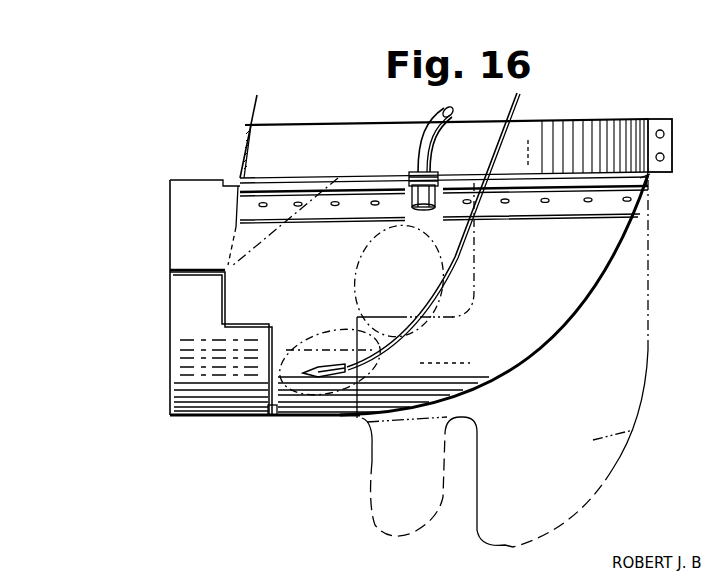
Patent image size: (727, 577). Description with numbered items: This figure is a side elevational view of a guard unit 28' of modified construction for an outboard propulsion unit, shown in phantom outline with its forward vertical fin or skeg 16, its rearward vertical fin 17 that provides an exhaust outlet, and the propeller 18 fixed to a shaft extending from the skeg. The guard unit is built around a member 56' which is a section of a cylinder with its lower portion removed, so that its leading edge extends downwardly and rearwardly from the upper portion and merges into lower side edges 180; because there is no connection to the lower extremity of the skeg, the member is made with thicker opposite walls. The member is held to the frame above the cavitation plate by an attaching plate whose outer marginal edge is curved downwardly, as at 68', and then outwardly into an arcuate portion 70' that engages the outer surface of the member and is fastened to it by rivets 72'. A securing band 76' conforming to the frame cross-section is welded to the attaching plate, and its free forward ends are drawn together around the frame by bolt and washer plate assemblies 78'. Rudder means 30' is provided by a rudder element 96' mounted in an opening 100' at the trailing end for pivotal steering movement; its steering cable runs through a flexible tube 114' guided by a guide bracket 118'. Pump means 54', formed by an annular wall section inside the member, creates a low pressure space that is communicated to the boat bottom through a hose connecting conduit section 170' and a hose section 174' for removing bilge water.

The forward vertical fin or skeg 16 is at (634, 431).
The rearward vertical fin 17 is at (424, 100).
The propeller 18 is at (385, 460).
The guard unit 28' is at (170, 297).
The rudder means 30' is at (297, 377).
The pump means 54' is at (400, 173).
The member 56' is at (494, 295).
The downwardly curved portion of attaching plate 68' is at (669, 191).
The arcuate portion 70' is at (545, 217).
The rivets 72' is at (322, 221).
The securing band 76' is at (593, 136).
The bolt and washer plate assemblies 78' is at (680, 136).
The rudder element 96' is at (203, 343).
The opening 100' is at (226, 345).
The flexible tube 114' is at (411, 238).
The guide bracket 118' is at (372, 300).
The hose connecting conduit section 170' is at (448, 170).
The hose section 174' is at (455, 132).
The lower side edges 180 is at (277, 418).